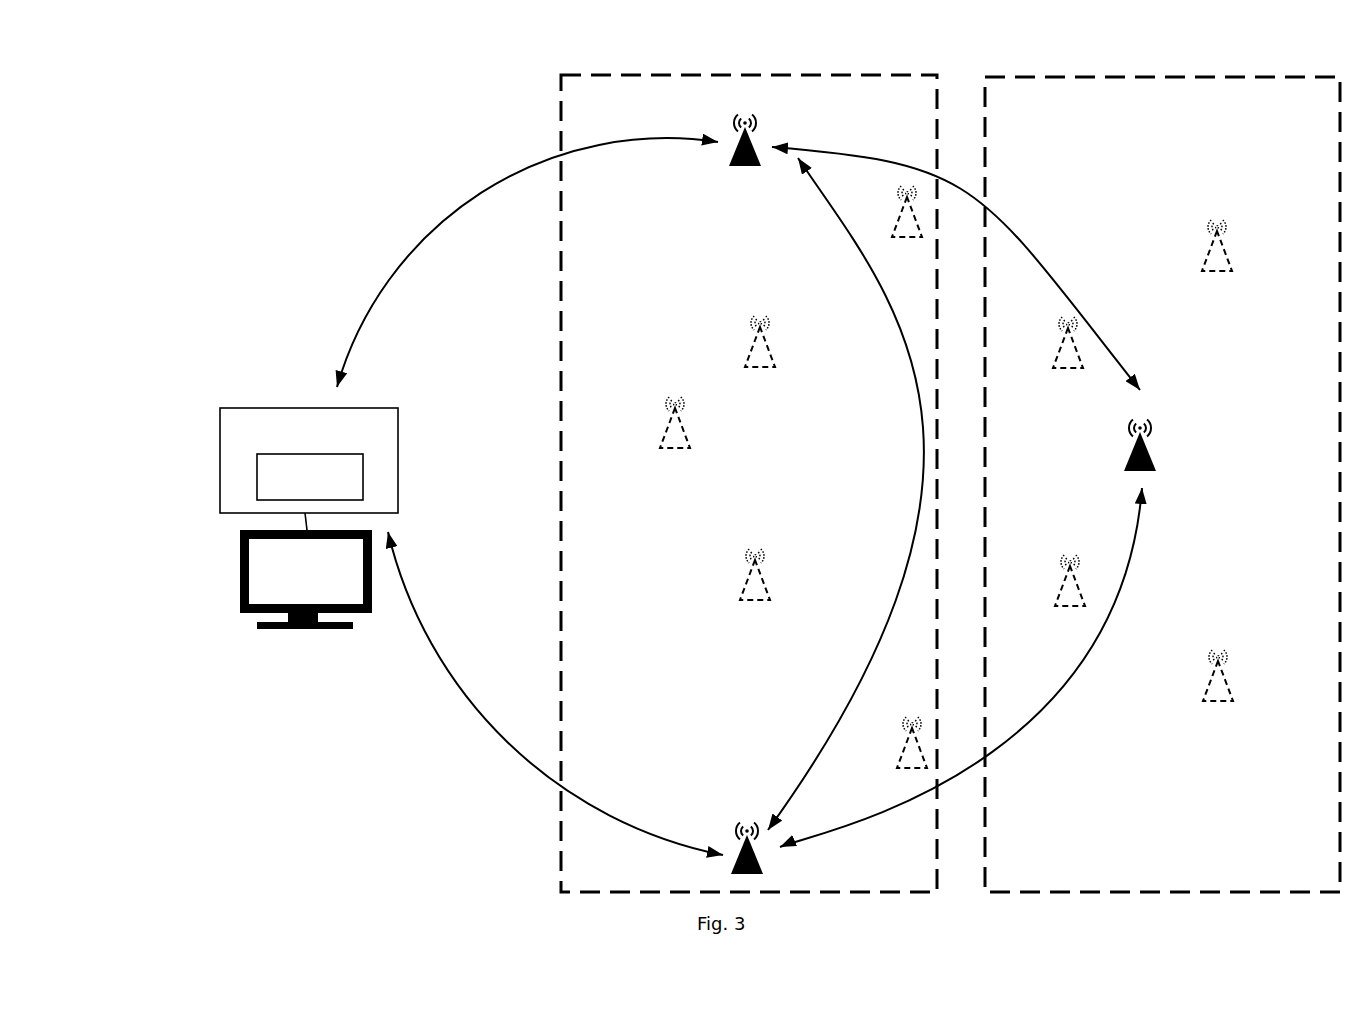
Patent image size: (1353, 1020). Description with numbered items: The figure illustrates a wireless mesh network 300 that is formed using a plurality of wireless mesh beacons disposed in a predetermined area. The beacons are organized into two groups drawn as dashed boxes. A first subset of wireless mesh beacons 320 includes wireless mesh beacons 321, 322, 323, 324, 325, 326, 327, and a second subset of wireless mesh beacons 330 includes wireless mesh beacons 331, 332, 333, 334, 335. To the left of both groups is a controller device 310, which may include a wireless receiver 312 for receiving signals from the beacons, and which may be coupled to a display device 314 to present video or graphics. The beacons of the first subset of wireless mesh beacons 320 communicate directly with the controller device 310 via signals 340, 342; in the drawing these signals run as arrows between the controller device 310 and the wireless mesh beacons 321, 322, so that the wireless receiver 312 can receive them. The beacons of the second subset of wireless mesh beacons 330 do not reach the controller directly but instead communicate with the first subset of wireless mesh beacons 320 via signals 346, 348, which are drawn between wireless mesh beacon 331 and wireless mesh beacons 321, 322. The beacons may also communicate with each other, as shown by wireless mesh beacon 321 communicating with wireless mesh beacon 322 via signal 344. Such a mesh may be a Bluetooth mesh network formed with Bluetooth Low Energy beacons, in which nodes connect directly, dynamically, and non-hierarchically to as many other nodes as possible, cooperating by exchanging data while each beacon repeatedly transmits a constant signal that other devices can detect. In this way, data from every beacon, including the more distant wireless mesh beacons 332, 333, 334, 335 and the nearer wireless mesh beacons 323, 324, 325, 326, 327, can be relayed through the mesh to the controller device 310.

The wireless mesh network 300 is at (207, 70).
The controller device 310 is at (262, 407).
The wireless receiver 312 is at (256, 480).
The display device 314 is at (240, 597).
The first subset of wireless mesh beacons 320 is at (593, 45).
The wireless mesh beacon 321 is at (752, 137).
The wireless mesh beacon 322 is at (738, 823).
The wireless mesh beacon 323 is at (905, 203).
The wireless mesh beacon 324 is at (758, 332).
The wireless mesh beacon 325 is at (670, 415).
The wireless mesh beacon 326 is at (750, 565).
The wireless mesh beacon 327 is at (908, 738).
The second subset of wireless mesh beacons 330 is at (1020, 45).
The wireless mesh beacon 331 is at (1152, 430).
The wireless mesh beacon 332 is at (1210, 238).
The wireless mesh beacon 333 is at (1063, 337).
The wireless mesh beacon 334 is at (1067, 570).
The wireless mesh beacon 335 is at (1213, 668).
The signal 340 is at (503, 183).
The signal 342 is at (481, 705).
The signal 344 is at (923, 433).
The signal 346 is at (1015, 233).
The signal 348 is at (1060, 687).